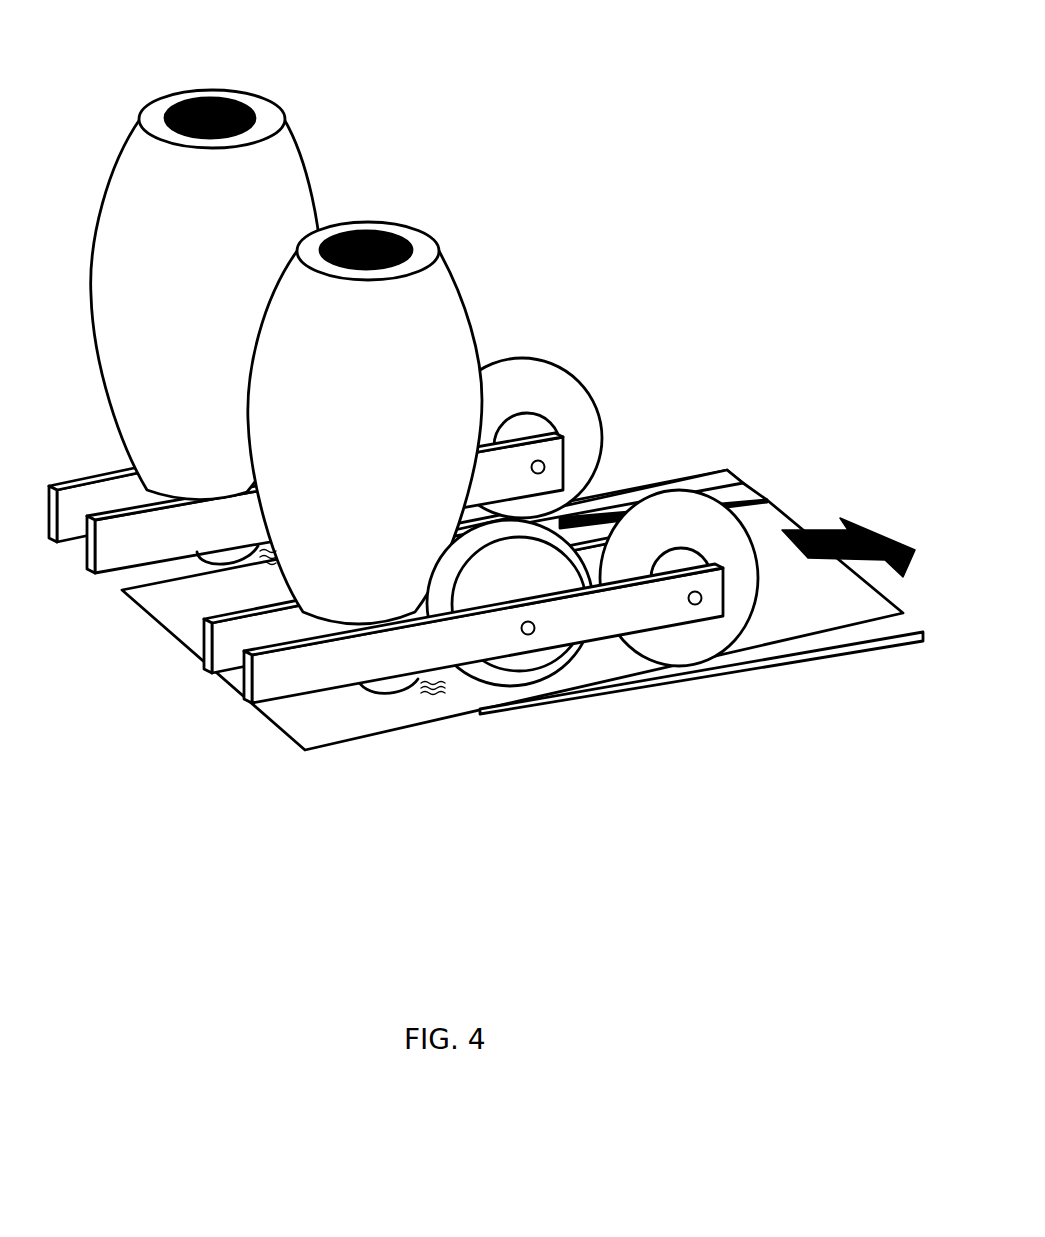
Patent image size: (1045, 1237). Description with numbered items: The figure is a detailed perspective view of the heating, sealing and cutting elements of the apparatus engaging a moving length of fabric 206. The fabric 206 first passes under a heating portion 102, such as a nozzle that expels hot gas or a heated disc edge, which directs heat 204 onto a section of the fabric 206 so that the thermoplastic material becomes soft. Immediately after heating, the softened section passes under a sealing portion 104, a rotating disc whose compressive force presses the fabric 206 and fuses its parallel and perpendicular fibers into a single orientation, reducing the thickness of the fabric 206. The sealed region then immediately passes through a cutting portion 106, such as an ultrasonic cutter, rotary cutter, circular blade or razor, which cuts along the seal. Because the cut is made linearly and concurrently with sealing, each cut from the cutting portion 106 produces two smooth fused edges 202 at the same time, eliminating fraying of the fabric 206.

The heating portion 102 is at (228, 556).
The sealing portion 104 is at (512, 687).
The cutting portion 106 is at (558, 364).
The fused edge 202 is at (738, 468).
The heat 204 is at (222, 557).
The fabric 206 is at (793, 521).